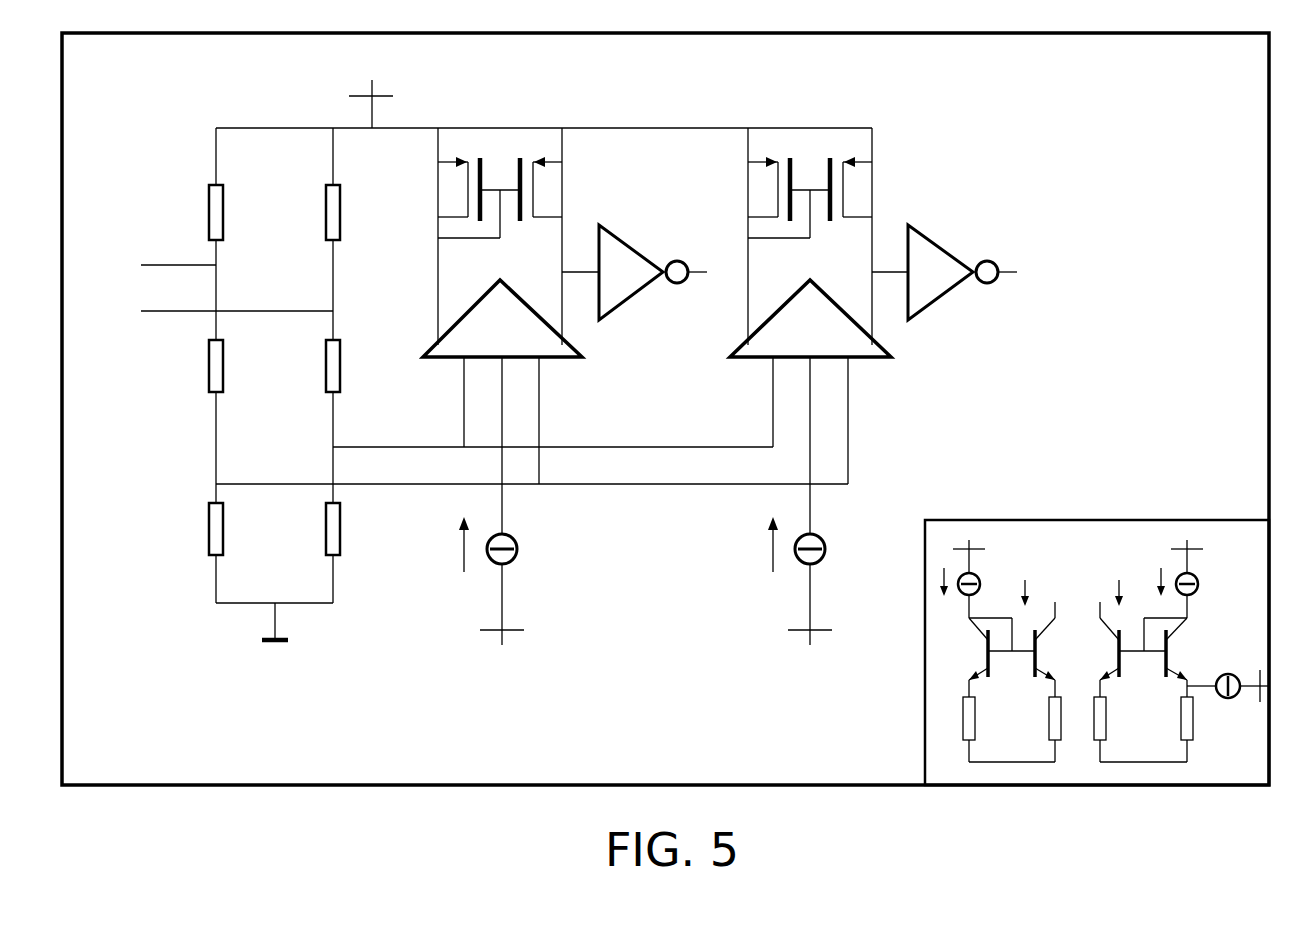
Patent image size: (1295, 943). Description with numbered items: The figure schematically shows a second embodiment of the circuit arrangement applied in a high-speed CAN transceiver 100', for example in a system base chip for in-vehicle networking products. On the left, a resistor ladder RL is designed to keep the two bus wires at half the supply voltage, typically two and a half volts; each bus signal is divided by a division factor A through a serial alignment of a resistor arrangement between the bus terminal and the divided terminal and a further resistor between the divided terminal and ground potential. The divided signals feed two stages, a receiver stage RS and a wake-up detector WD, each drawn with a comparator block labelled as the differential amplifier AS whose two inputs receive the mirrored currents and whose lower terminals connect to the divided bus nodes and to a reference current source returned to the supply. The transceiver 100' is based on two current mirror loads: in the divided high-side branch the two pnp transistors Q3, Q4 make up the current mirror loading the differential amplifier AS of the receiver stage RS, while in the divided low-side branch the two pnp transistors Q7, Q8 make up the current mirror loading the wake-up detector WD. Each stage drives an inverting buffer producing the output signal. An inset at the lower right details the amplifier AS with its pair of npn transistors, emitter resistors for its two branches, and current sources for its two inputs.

The high-speed CAN transceiver 100' is at (665, 439).
The resistor ladder RL is at (261, 76).
The receiver stage RS is at (483, 76).
The wake-up detector WD is at (794, 76).
The differential amplifier AS is at (487, 357).
The pnp transistor Q3 is at (447, 189).
The pnp transistor Q4 is at (549, 189).
The pnp transistor Q7 is at (757, 189).
The pnp transistor Q8 is at (859, 189).